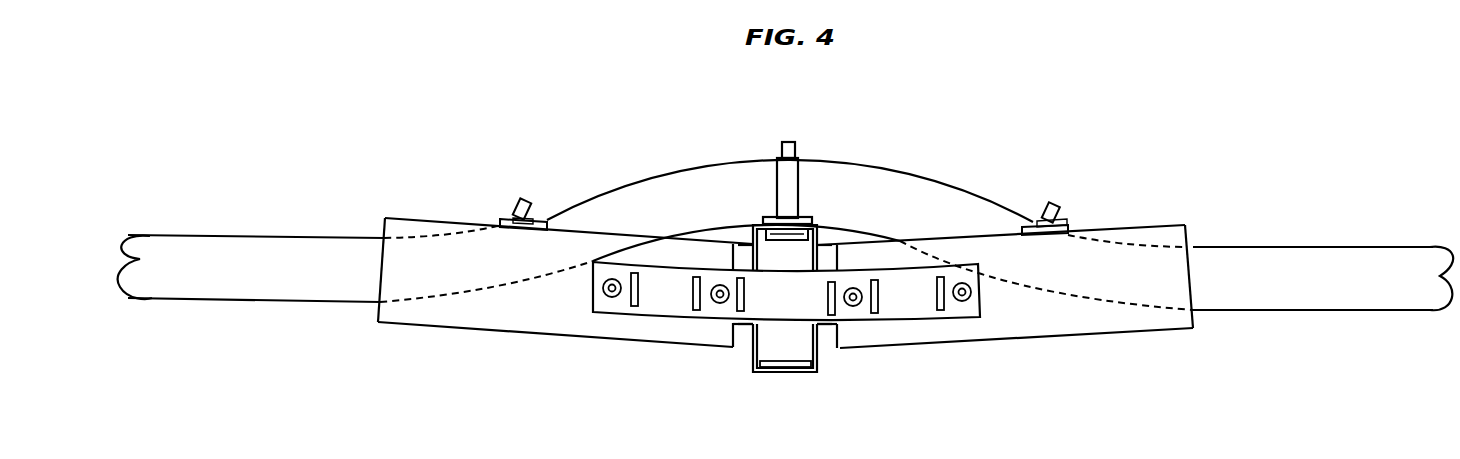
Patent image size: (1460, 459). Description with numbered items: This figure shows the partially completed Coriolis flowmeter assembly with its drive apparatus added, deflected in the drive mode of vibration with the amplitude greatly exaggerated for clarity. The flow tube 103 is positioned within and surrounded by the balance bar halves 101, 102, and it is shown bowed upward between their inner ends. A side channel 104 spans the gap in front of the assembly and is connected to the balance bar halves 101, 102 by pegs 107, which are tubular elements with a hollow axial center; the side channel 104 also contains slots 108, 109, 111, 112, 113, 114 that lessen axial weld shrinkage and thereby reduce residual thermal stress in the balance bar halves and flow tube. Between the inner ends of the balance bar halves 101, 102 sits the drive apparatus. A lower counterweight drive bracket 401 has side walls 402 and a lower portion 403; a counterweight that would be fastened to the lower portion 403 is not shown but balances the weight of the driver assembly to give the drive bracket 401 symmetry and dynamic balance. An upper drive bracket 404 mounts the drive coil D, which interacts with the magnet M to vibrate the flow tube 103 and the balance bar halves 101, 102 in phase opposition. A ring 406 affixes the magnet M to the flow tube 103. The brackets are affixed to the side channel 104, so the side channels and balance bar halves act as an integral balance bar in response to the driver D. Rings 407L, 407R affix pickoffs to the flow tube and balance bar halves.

The balance bar half 101 is at (455, 317).
The balance bar half 102 is at (1085, 323).
The flow tube 103 is at (237, 241).
The side channel 104 is at (662, 275).
The peg 107 is at (720, 284).
The slot 108 is at (642, 300).
The slot 109 is at (687, 300).
The slot 111 is at (730, 312).
The slot 112 is at (827, 300).
The slot 113 is at (880, 301).
The slot 114 is at (947, 303).
The lower counterweight drive bracket 401 is at (812, 278).
The side wall 402 is at (820, 350).
The lower portion 403 is at (788, 368).
The upper drive bracket 404 is at (803, 227).
The ring 406 is at (782, 150).
The ring 407L is at (533, 217).
The ring 407R is at (1043, 220).
The magnet M is at (513, 210).
The drive coil D is at (770, 217).